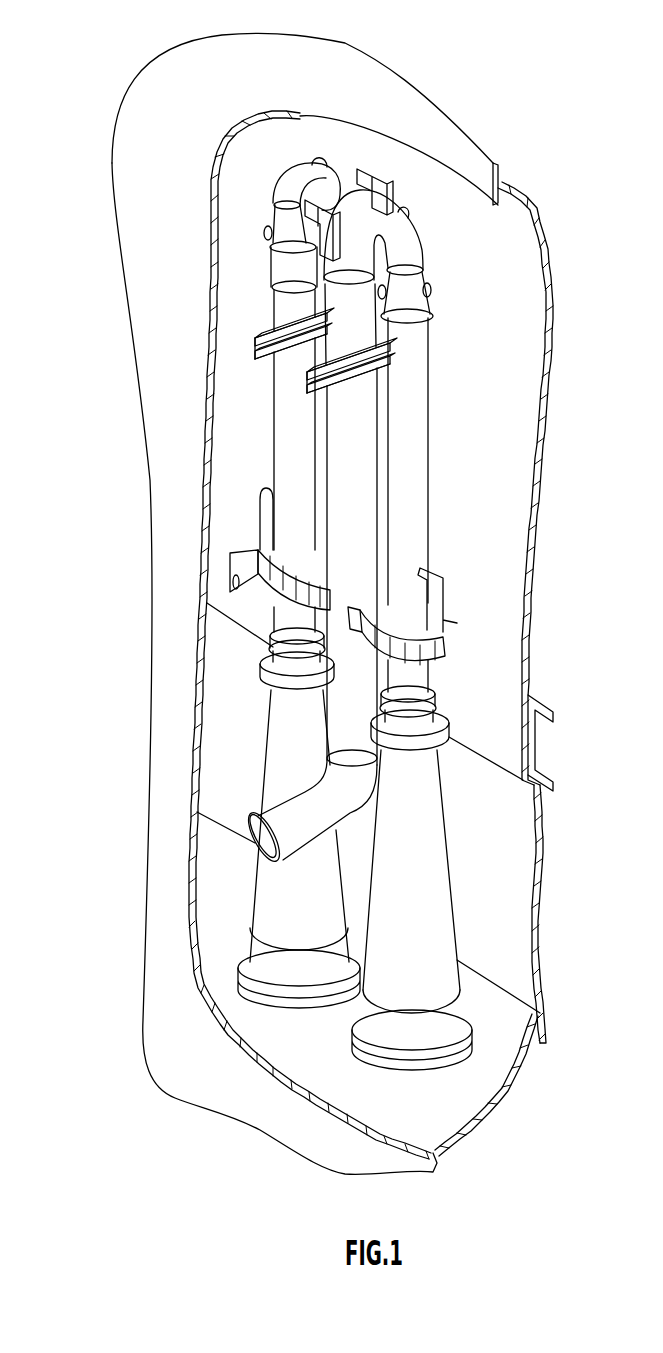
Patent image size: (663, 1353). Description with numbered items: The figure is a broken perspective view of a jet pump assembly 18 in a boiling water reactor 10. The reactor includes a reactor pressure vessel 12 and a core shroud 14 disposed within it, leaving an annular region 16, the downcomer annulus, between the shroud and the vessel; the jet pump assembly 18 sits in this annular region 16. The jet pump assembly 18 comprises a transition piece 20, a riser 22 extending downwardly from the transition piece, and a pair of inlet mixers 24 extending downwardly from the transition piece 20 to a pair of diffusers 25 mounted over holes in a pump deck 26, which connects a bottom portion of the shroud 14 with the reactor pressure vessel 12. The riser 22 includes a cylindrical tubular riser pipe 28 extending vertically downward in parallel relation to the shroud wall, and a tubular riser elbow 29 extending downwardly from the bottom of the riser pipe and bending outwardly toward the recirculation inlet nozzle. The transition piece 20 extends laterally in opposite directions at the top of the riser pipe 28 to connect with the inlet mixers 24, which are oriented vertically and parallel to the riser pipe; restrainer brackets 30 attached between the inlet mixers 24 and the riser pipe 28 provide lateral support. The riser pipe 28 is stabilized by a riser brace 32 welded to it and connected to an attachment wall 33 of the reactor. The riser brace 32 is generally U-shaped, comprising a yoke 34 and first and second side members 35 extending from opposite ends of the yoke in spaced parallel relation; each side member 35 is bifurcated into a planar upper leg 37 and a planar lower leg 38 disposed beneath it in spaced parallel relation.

The boiling water reactor 10 is at (557, 170).
The reactor pressure vessel 12 is at (149, 183).
The core shroud 14 is at (557, 273).
The annular region 16 is at (470, 217).
The jet pump assembly 18 is at (265, 476).
The transition piece 20 is at (333, 187).
The riser 22 is at (390, 489).
The inlet mixers 24 is at (273, 305).
The diffusers 25 is at (254, 886).
The pump deck 26 is at (521, 1068).
The riser pipe 28 is at (392, 437).
The riser elbow 29 is at (360, 805).
The restrainer brackets 30 is at (258, 556).
The riser brace 32 is at (253, 333).
The attachment wall 33 is at (170, 568).
The yoke 34 is at (392, 342).
The side members 35 is at (278, 364).
The upper leg 37 is at (257, 346).
The lower leg 38 is at (257, 357).